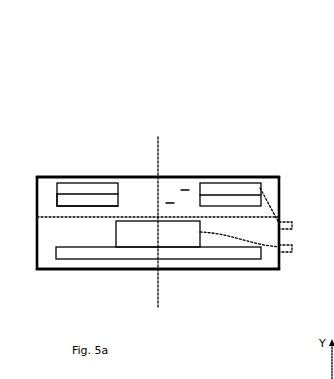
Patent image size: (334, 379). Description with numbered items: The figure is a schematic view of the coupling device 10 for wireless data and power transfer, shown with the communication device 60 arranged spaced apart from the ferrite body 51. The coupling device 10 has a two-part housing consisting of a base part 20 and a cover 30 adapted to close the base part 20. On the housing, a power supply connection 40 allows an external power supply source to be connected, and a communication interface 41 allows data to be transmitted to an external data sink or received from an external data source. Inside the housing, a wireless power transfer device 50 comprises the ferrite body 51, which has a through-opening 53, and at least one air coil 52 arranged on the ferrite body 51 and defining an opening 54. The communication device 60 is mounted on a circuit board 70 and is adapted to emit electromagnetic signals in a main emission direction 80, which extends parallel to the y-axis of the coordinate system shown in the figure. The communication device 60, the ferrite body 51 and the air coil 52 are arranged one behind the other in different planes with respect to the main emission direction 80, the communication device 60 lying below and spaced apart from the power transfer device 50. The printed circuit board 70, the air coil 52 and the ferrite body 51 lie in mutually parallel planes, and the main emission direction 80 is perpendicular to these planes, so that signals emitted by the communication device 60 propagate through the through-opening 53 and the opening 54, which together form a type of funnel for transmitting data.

The coupling device 10 is at (141, 34).
The base part 20 is at (52, 270).
The cover 30 is at (43, 176).
The power supply connection 40 is at (292, 222).
The communication interface 41 is at (292, 252).
The wireless power transfer device 50 is at (245, 185).
The ferrite body 51 is at (64, 194).
The air coil 52 is at (108, 184).
The through-opening 53 is at (185, 190).
The opening 54 is at (170, 203).
The communication device 60 is at (175, 237).
The circuit board 70 is at (103, 249).
The main emission direction 80 is at (158, 137).